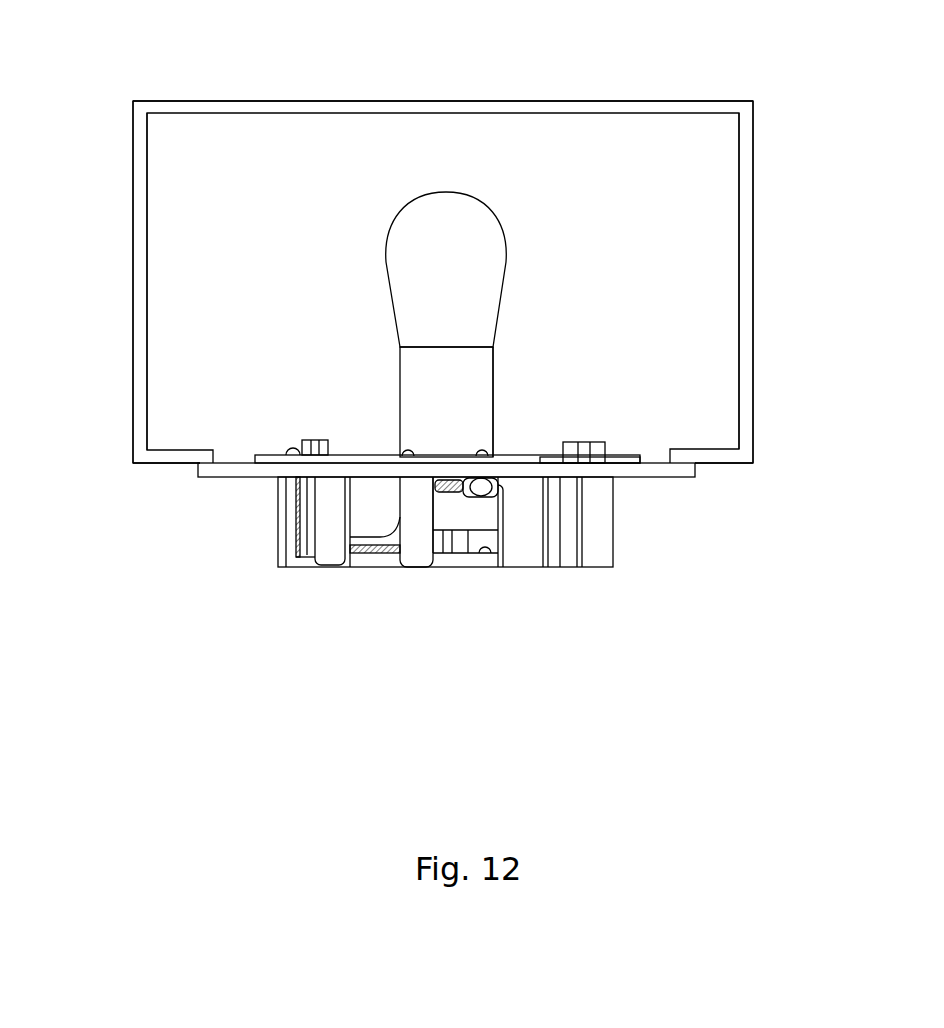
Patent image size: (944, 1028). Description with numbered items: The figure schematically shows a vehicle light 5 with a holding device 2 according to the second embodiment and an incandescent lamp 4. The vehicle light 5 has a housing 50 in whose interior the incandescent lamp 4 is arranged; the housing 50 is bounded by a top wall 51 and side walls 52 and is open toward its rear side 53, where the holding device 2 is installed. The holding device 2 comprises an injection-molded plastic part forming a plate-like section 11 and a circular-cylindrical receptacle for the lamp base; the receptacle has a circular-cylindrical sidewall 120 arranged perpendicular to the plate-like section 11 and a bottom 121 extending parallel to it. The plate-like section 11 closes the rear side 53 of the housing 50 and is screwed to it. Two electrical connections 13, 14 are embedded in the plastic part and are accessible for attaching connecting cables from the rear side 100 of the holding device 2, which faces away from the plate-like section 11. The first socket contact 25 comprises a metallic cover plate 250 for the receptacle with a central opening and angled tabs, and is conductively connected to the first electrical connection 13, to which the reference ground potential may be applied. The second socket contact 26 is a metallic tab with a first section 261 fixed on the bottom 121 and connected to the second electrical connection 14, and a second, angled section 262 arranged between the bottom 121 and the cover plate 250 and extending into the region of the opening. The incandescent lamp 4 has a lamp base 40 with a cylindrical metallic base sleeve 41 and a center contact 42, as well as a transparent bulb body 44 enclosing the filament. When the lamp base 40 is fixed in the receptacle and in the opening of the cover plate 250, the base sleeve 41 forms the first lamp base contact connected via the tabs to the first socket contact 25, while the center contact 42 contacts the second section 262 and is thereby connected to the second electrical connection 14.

The holding device 2 is at (499, 610).
The incandescent lamp 4 is at (624, 234).
The vehicle light 5 is at (683, 77).
The plate-like section 11 is at (662, 477).
The first electrical connection 13 is at (585, 442).
The second electrical connection 14 is at (305, 440).
The first socket contact 25 is at (498, 492).
The second socket contact 26 is at (488, 612).
The lamp base 40 is at (495, 410).
The base sleeve 41 is at (495, 372).
The center contact 42 is at (463, 490).
The bulb body 44 is at (446, 192).
The housing 50 is at (757, 242).
The top wall 51 is at (585, 101).
The side wall 52 is at (145, 275).
The rear side 53 is at (156, 463).
The rear side 100 is at (470, 487).
The circular-cylindrical sidewall 120 is at (415, 550).
The bottom 121 is at (465, 553).
The cover plate 250 is at (362, 455).
The first section 261 is at (376, 545).
The second section 262 is at (457, 485).